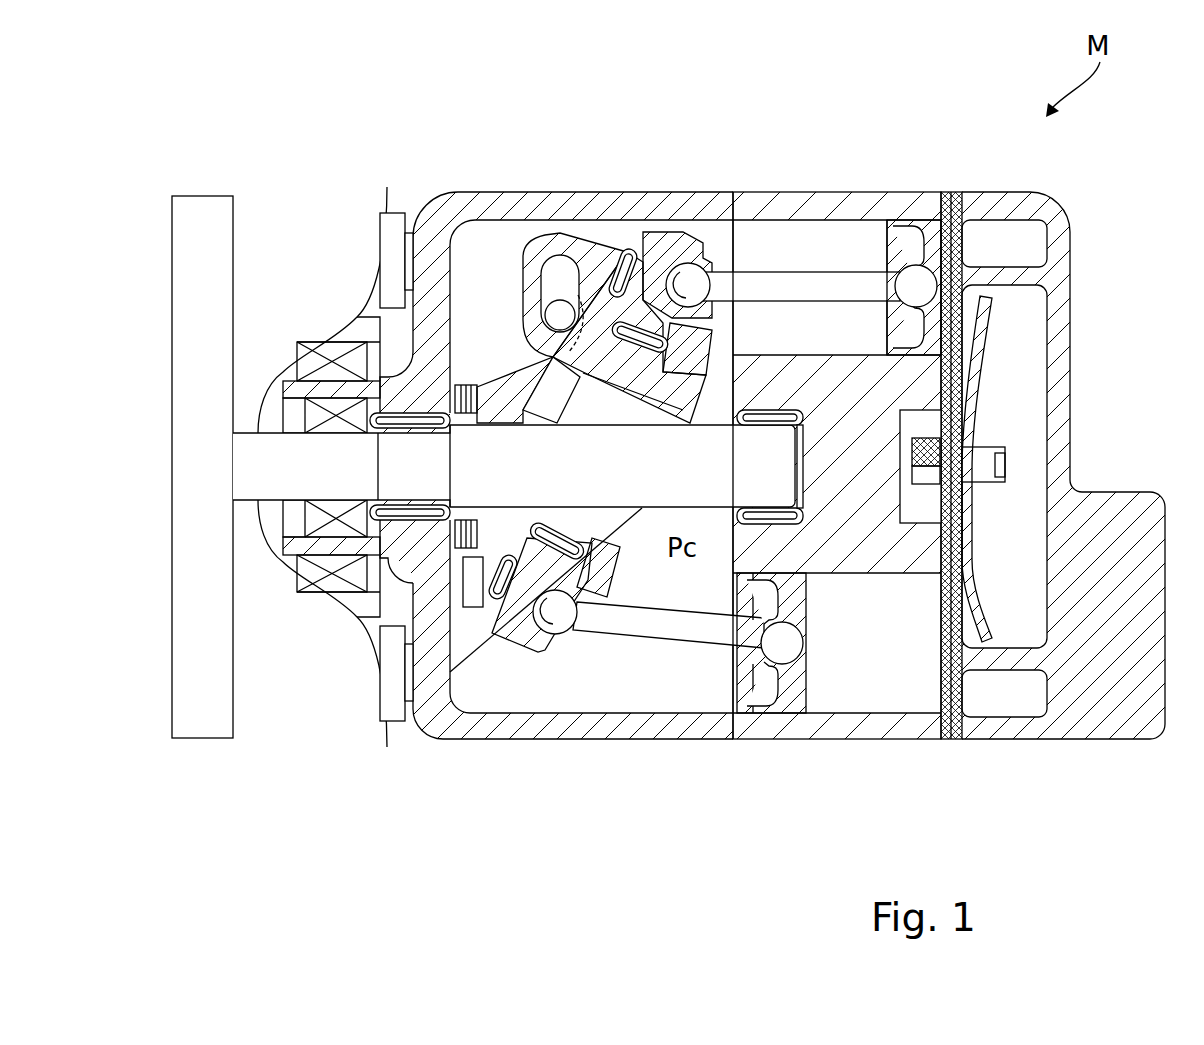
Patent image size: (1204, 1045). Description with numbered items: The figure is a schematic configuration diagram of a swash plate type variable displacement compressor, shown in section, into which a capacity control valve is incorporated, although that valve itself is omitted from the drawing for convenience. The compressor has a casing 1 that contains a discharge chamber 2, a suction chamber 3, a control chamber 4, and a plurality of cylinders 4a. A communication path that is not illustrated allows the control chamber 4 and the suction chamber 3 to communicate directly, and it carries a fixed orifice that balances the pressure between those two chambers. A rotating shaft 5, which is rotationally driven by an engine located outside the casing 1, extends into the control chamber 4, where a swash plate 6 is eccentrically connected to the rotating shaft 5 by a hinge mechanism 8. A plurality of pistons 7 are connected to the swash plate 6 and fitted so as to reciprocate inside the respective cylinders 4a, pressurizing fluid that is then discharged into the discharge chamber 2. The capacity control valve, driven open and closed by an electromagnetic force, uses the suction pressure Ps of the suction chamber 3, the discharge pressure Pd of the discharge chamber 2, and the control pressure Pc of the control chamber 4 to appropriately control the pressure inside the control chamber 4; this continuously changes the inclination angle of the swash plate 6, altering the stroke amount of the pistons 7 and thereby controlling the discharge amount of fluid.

The casing 1 is at (455, 180).
The discharge chamber 2 is at (1022, 388).
The suction chamber 3 is at (1035, 243).
The control chamber 4 is at (652, 690).
The cylinders 4a is at (817, 240).
The rotating shaft 5 is at (481, 470).
The swash plate 6 is at (655, 318).
The pistons 7 is at (921, 240).
The hinge mechanism 8 is at (490, 372).